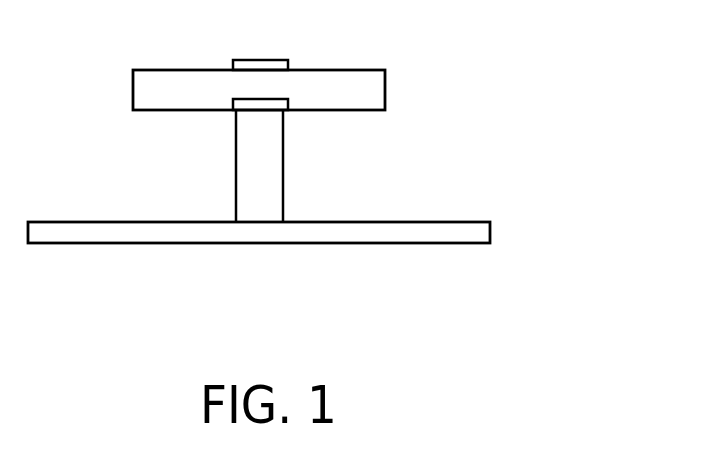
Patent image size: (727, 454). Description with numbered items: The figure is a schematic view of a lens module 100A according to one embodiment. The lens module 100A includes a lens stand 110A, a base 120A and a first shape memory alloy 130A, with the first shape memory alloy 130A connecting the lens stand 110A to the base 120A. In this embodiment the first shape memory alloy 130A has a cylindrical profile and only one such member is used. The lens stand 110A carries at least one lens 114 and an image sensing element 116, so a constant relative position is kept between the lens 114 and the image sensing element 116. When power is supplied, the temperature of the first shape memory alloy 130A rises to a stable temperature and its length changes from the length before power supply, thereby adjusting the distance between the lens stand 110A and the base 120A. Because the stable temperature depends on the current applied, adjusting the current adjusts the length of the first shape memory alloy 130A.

The lens module 100A is at (495, 317).
The lens stand 110A is at (375, 92).
The lens 114 is at (282, 63).
The image sensing element 116 is at (285, 103).
The base 120A is at (482, 233).
The first shape memory alloy 130A is at (273, 183).